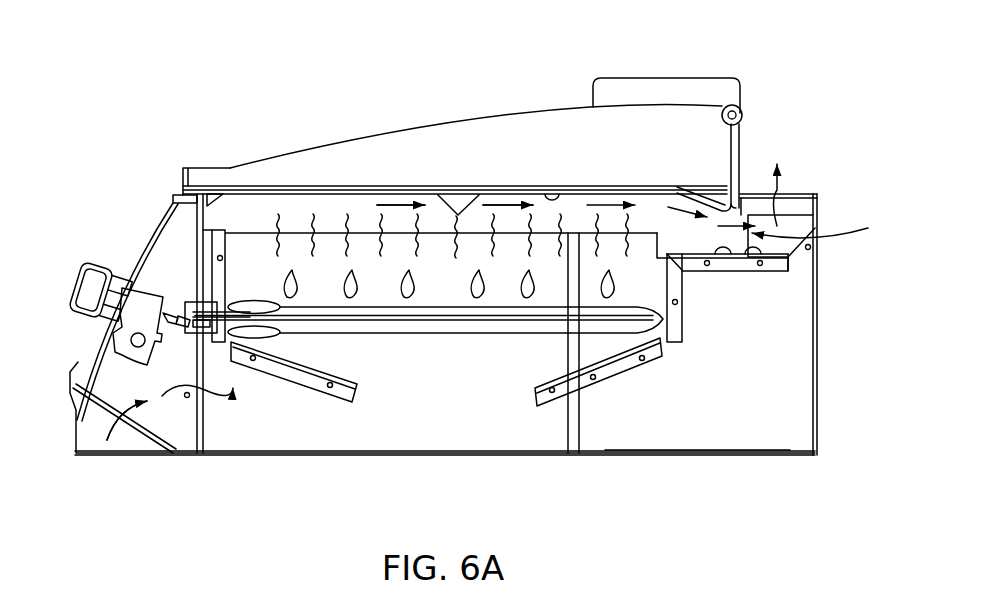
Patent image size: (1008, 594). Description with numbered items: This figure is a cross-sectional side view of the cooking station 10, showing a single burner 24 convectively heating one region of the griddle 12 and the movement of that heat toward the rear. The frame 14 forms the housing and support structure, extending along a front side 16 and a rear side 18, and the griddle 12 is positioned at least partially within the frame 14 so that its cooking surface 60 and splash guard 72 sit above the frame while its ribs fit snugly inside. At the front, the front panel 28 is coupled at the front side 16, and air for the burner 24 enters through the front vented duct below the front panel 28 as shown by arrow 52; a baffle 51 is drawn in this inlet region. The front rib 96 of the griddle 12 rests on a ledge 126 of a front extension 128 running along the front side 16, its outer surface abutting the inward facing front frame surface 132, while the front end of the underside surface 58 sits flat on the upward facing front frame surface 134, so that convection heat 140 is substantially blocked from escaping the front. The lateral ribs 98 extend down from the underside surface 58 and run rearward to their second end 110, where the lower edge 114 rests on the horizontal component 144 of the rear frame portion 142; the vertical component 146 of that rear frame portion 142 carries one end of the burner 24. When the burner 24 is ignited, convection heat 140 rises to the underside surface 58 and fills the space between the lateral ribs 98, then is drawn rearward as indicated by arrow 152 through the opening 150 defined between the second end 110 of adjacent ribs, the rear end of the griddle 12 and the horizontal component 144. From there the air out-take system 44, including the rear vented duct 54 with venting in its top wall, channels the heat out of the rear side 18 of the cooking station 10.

The cooking station 10 is at (832, 97).
The griddle 12 is at (627, 151).
The frame 14 is at (318, 458).
The front side 16 is at (148, 197).
The rear side 18 is at (830, 285).
The burner 24 is at (490, 336).
The front panel 28 is at (87, 352).
The air out-take system 44 is at (807, 183).
The baffle 51 is at (133, 437).
The arrow 52 is at (189, 398).
The rear vented duct 54 is at (818, 205).
The underside surface 58 is at (557, 193).
The cooking surface 60 is at (503, 187).
The splash guard 72 is at (475, 122).
The front rib 96 is at (213, 206).
The lateral ribs 98 is at (313, 207).
The second end 110 is at (765, 255).
The lower edge 114 is at (247, 233).
The ledge 126 is at (167, 210).
The front extension 128 is at (208, 255).
The inward facing front frame surface 132 is at (212, 222).
The upward facing front frame surface 134 is at (187, 197).
The convection heat 140 is at (347, 210).
The rear frame portion 142 is at (702, 280).
The horizontal component 144 is at (722, 250).
The vertical component 146 is at (673, 330).
The opening 150 is at (833, 227).
The arrow 152 is at (397, 200).